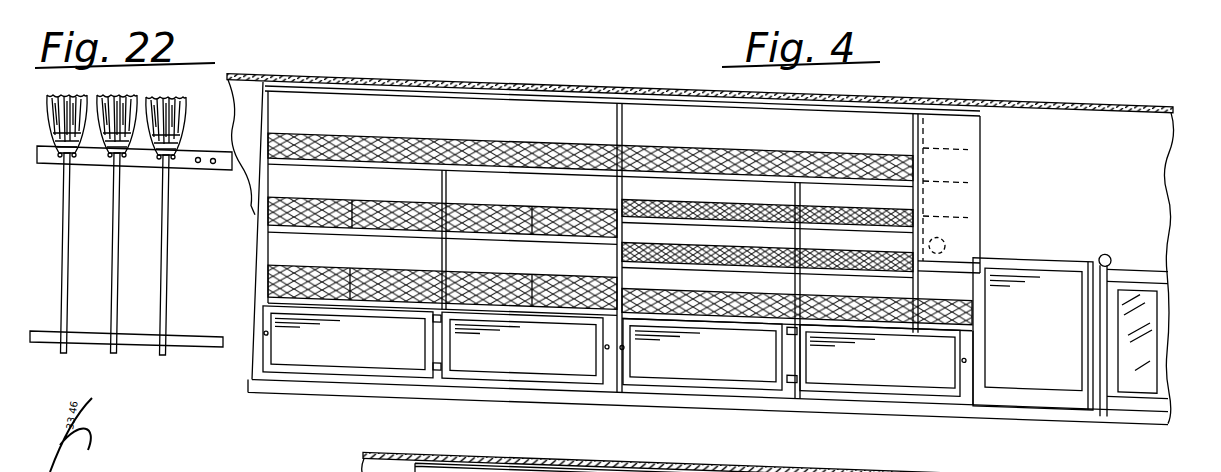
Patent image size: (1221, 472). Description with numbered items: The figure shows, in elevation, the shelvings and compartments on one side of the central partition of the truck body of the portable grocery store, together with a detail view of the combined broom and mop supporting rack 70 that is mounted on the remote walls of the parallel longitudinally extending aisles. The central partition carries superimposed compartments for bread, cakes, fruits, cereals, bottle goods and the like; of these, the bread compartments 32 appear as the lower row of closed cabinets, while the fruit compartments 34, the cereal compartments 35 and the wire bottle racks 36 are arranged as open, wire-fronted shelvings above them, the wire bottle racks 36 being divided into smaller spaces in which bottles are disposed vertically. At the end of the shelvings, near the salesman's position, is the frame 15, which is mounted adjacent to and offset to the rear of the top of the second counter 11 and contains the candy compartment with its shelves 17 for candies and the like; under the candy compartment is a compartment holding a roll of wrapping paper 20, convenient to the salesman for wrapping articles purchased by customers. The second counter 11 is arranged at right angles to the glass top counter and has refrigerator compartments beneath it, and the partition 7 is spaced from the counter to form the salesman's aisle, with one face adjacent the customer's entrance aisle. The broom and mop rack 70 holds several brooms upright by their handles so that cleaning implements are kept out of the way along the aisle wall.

In FIG. 4, the partition 7 is at (1133, 240).
In FIG. 4, the second counter 11 is at (1035, 215).
In FIG. 4, the frame 15 is at (962, 108).
In FIG. 4, the shelves 17 is at (943, 191).
In FIG. 4, the roll of wrapping paper 20 is at (975, 217).
In FIG. 4, the bread compartments 32 is at (365, 346).
In FIG. 4, the fruit compartments 34 is at (290, 246).
In FIG. 4, the cereal compartments 35 is at (640, 97).
In FIG. 4, the wire bottle racks 36 is at (766, 175).
In FIG. 22, the combined broom and mop supporting rack 70 is at (145, 165).